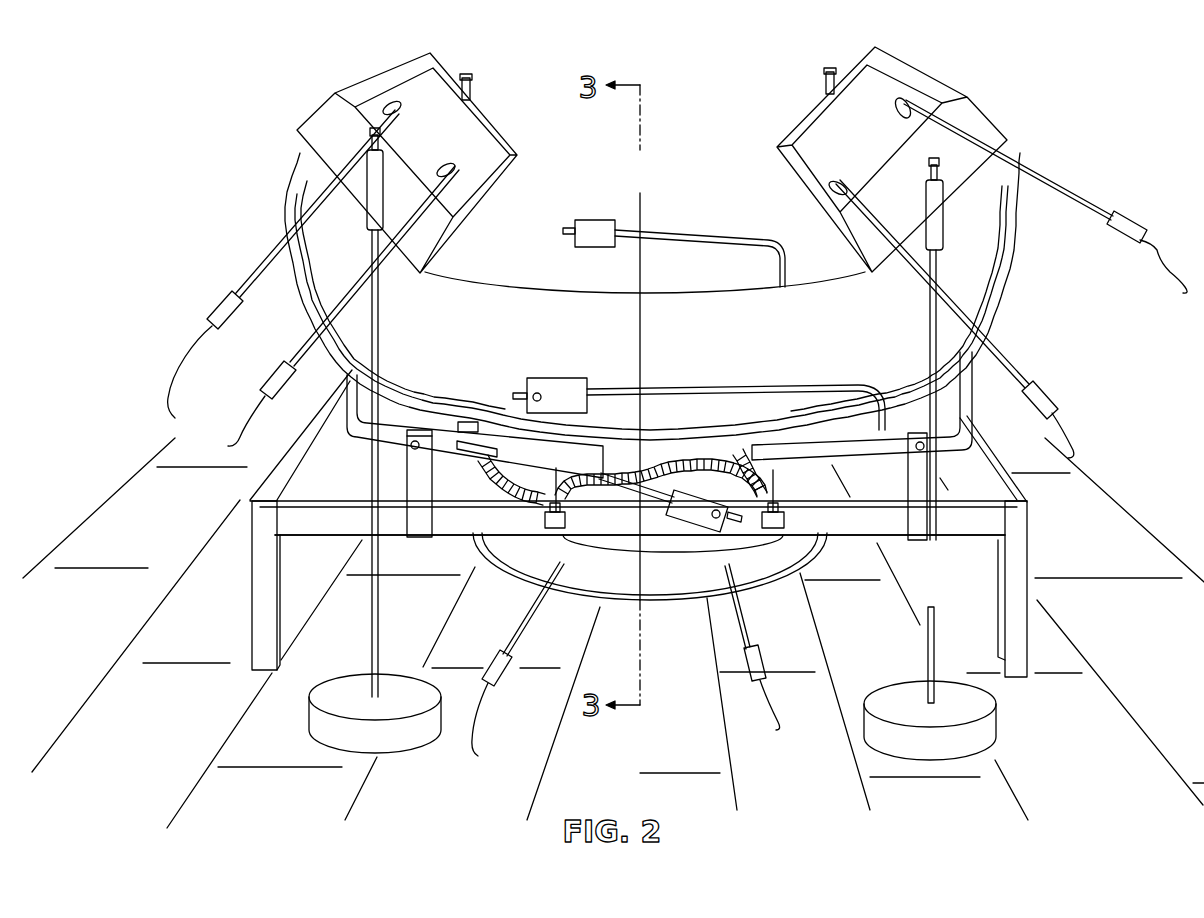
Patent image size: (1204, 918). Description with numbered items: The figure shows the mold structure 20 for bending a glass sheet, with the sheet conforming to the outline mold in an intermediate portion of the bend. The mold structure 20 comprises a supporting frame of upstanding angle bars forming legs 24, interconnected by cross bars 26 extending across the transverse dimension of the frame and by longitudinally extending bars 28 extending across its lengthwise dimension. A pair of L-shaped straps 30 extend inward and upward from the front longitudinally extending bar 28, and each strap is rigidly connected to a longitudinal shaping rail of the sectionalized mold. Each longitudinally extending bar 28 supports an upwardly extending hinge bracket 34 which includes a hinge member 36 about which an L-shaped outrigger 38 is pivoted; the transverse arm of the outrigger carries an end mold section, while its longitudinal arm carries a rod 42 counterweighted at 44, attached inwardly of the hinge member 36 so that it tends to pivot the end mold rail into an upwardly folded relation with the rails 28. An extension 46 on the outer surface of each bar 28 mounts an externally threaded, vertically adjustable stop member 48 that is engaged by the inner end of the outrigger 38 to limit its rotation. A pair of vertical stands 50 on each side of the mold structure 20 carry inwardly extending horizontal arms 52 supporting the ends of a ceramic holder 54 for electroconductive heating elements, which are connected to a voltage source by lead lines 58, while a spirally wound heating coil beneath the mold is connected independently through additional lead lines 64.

The mold structure 20 is at (948, 538).
The legs 24 is at (1027, 565).
The cross bars 26 is at (1018, 490).
The longitudinally extending bars 28 is at (838, 540).
The L-shaped straps 30 is at (465, 422).
The hinge bracket 34 is at (422, 538).
The hinge member 36 is at (410, 447).
The L-shaped outrigger 38 is at (850, 447).
The rod 42 is at (668, 235).
The counterweight 44 is at (598, 222).
The extension 46 is at (785, 518).
The stop member 48 is at (762, 468).
The vertical stands 50 is at (383, 308).
The horizontal arms 52 is at (926, 190).
The ceramic holder 54 is at (920, 72).
The lead lines 58 is at (230, 443).
The additional lead lines 64 is at (478, 754).